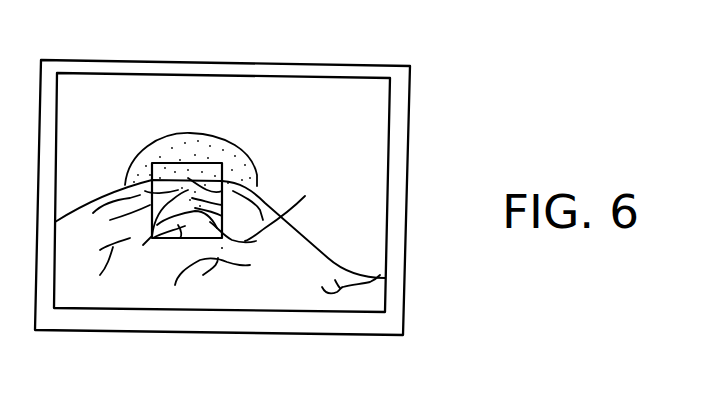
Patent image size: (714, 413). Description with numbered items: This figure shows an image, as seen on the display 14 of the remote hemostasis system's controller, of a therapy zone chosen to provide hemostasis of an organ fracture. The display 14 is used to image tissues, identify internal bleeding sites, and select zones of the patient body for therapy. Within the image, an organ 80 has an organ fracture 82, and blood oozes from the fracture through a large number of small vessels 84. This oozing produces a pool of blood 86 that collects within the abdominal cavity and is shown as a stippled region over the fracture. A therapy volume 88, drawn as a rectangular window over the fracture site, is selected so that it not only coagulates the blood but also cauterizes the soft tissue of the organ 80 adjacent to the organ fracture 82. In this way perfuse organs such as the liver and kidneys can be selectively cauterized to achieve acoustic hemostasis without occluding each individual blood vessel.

The display 14 is at (341, 58).
The organ 80 is at (328, 258).
The organ fracture 82 is at (175, 185).
The small vessels 84 is at (258, 200).
The pool of blood 86 is at (237, 145).
The therapy volume 88 is at (171, 240).